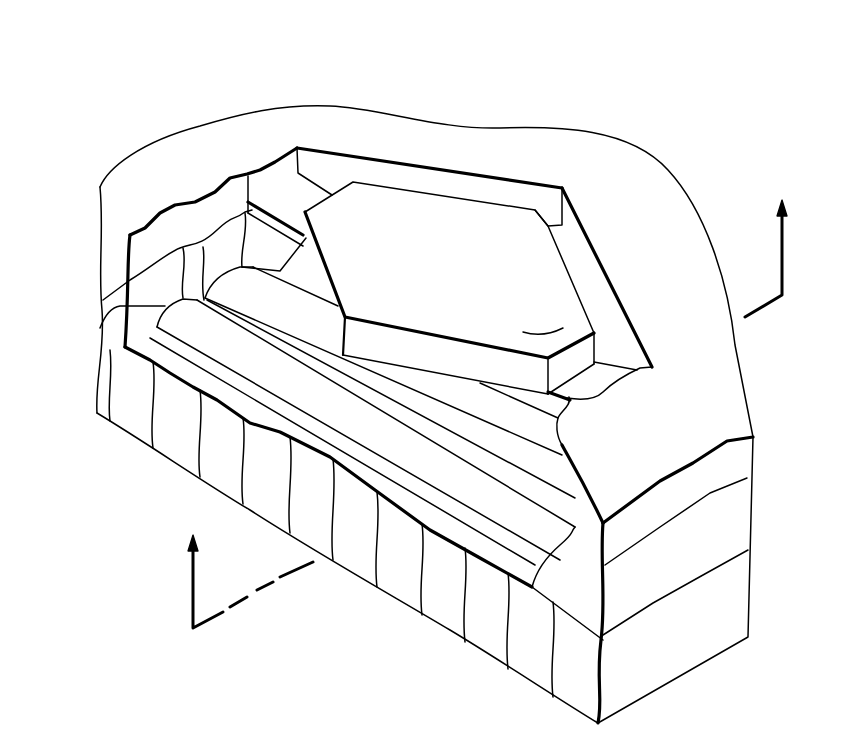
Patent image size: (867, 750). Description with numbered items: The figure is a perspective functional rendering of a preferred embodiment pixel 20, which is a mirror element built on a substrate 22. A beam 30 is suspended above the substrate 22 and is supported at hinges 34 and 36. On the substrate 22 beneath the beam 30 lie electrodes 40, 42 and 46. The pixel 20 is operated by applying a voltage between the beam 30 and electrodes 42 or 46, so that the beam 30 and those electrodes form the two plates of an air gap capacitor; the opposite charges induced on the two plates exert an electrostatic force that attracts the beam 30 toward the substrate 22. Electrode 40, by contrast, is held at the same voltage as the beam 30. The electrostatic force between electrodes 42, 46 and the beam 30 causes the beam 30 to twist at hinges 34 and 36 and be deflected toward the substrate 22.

The pixel 20 is at (288, 74).
The substrate 22 is at (533, 662).
The beam 30 is at (455, 282).
The hinge 34 is at (288, 193).
The hinge 36 is at (598, 370).
The electrode 40 is at (103, 325).
The electrode 42 is at (543, 477).
The electrode 46 is at (547, 415).